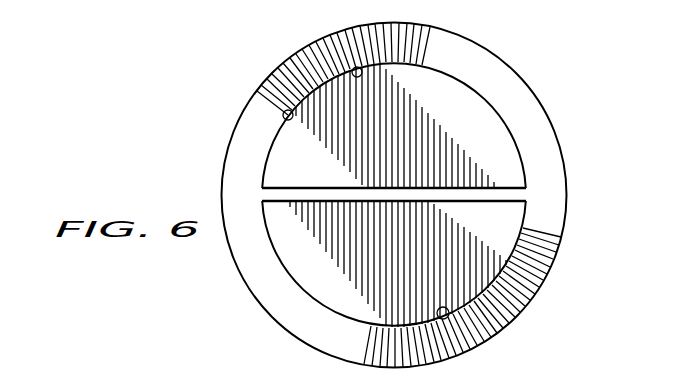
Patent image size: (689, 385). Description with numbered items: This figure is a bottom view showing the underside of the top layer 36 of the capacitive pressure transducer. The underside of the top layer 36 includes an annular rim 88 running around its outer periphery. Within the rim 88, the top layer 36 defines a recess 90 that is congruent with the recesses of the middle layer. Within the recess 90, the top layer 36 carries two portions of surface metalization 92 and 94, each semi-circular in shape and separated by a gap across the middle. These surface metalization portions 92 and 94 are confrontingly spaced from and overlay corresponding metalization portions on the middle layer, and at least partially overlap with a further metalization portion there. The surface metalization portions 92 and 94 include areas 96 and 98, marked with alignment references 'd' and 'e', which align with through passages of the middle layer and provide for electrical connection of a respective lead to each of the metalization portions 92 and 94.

The top layer 36 is at (511, 68).
The annular rim 88 is at (527, 283).
The recess 90 is at (359, 67).
The surface metalization portion 92 is at (406, 143).
The surface metalization portion 94 is at (406, 268).
The area 96 is at (289, 110).
The area 98 is at (449, 313).